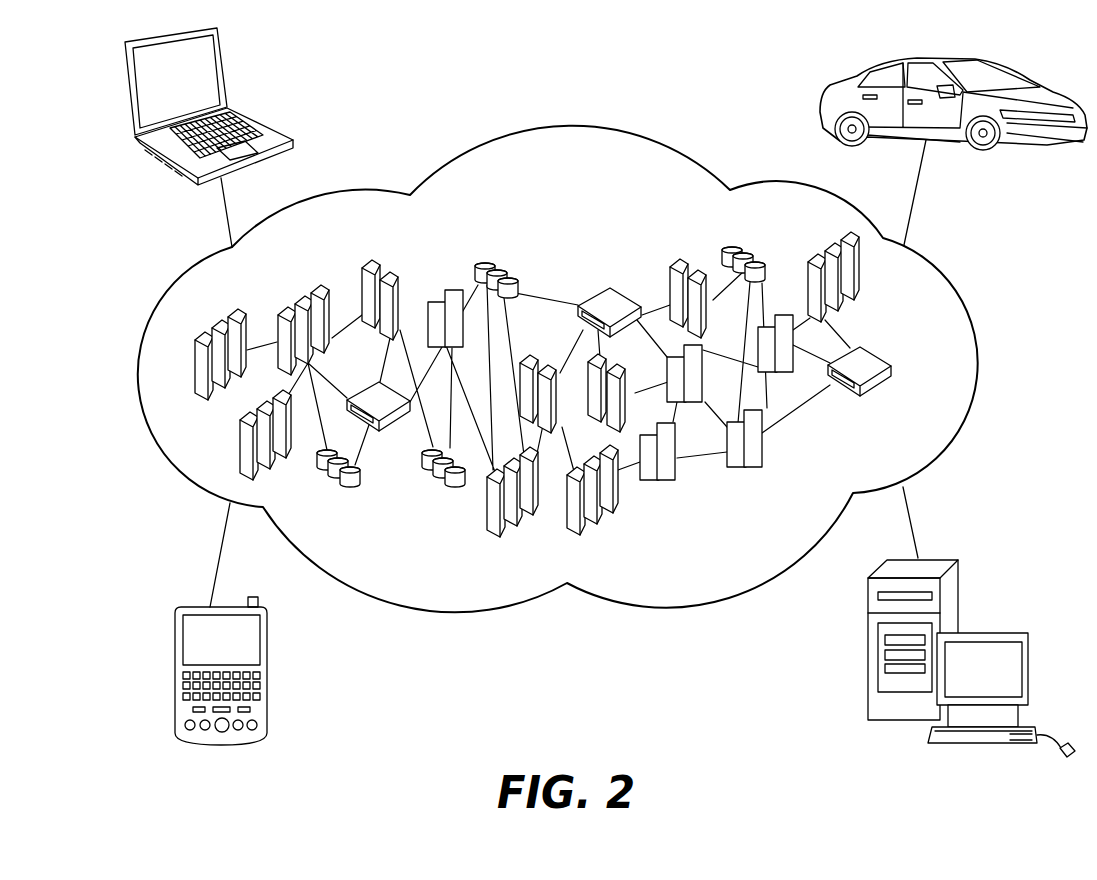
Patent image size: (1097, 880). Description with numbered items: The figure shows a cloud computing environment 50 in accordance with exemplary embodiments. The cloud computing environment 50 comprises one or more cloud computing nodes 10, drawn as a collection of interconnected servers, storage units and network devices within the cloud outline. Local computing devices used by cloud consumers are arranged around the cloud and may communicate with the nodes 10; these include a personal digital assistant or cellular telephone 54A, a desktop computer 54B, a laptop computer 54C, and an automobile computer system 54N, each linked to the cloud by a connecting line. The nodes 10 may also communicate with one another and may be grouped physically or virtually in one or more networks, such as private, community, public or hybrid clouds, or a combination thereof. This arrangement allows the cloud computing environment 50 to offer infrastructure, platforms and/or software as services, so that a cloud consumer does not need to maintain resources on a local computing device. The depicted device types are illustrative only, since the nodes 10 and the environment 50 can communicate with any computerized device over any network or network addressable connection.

The cloud computing nodes 10 is at (472, 206).
The cloud computing environment 50 is at (573, 132).
The personal digital assistant (PDA) or cellular telephone 54A is at (252, 639).
The desktop computer 54B is at (1003, 637).
The laptop computer 54C is at (210, 85).
The automobile computer system 54N is at (830, 92).